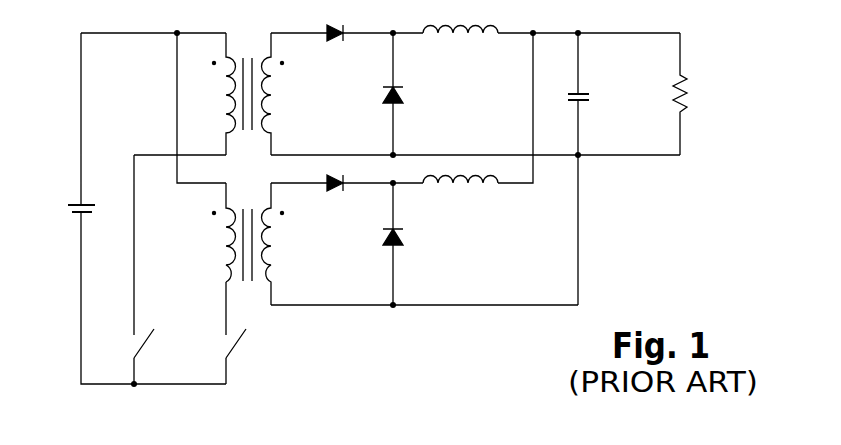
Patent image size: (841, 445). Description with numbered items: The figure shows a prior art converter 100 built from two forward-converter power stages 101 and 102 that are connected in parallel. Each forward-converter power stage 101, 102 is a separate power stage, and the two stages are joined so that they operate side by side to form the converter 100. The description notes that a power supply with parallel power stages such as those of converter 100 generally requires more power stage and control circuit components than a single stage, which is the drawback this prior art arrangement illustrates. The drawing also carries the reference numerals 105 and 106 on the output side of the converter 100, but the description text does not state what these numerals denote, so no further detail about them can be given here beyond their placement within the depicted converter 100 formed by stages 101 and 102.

The converter 100 is at (379, 205).
The forward-converter power stage 101 is at (351, 94).
The forward-converter power stage 102 is at (336, 233).
The filter capacitor CF 105 is at (586, 93).
The load resistor RL 106 is at (683, 108).